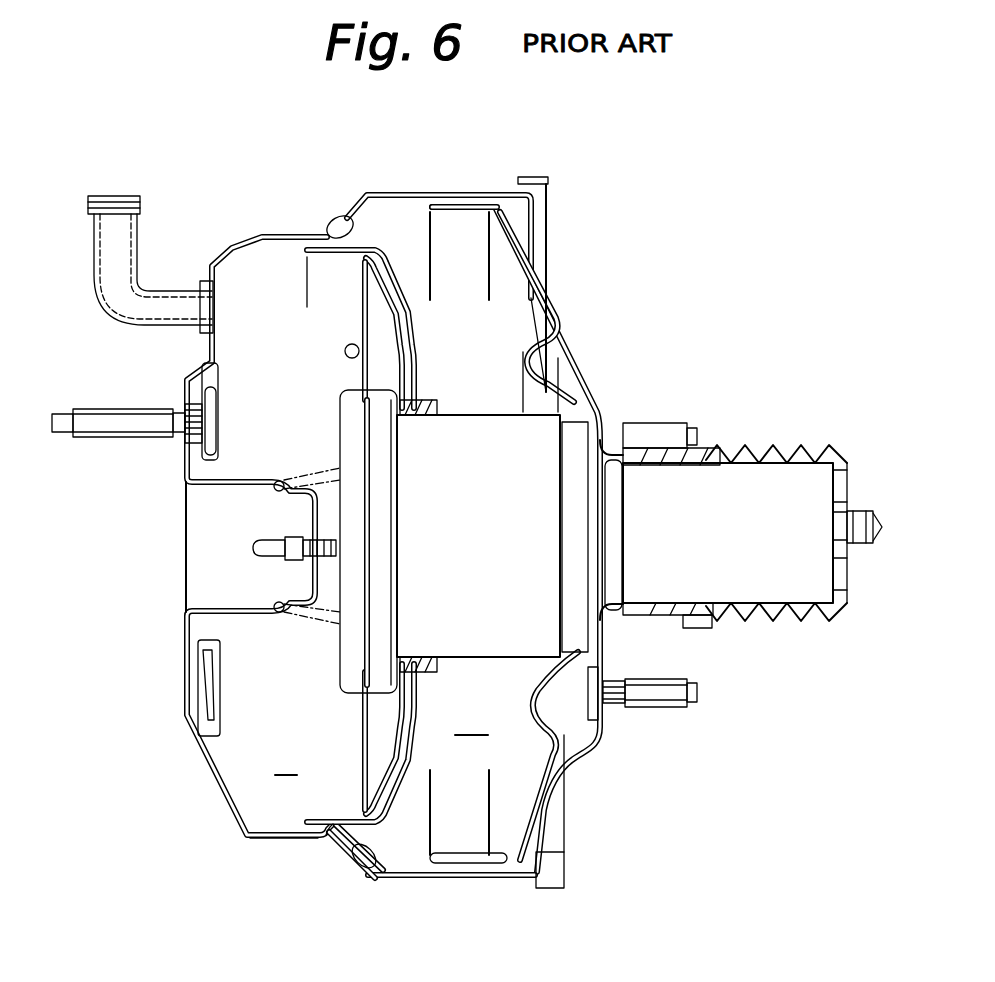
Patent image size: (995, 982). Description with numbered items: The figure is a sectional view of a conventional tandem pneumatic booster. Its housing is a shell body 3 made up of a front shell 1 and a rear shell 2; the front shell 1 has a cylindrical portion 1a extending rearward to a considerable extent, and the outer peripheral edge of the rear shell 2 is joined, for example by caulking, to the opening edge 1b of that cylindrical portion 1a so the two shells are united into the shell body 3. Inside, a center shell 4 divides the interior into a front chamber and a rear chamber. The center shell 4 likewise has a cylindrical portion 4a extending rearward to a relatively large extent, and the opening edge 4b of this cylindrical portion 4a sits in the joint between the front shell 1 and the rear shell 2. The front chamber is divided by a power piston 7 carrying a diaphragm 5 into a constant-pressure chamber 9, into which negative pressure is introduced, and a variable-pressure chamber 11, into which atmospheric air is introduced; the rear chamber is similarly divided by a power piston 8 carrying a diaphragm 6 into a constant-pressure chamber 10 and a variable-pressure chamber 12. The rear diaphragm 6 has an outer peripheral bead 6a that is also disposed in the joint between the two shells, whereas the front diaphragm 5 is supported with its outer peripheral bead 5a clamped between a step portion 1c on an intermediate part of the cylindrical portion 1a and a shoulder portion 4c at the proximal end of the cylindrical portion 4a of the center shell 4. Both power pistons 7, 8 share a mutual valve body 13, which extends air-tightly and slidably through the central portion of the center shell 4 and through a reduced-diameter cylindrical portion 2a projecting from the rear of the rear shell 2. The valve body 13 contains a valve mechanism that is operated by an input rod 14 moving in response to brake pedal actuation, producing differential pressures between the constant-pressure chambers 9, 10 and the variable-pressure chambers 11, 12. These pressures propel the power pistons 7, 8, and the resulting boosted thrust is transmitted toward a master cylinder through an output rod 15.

The front shell 1 is at (226, 786).
The cylindrical portion 1a is at (273, 840).
The opening edge 1b is at (541, 888).
The step portion 1c is at (324, 846).
The rear shell 2 is at (562, 742).
The reduced-diameter cylindrical portion 2a is at (658, 424).
The shell body 3 is at (228, 255).
The center shell 4 is at (362, 236).
The cylindrical portion 4a is at (429, 866).
The opening edge 4b is at (538, 872).
The shoulder portion 4c is at (380, 880).
The diaphragm 5 is at (340, 257).
The outer peripheral bead 5a is at (335, 224).
The diaphragm 6 is at (457, 218).
The outer peripheral bead 6a is at (556, 185).
The power piston 7 is at (343, 351).
The power piston 8 is at (521, 353).
The constant-pressure chamber 9 is at (286, 759).
The constant-pressure chamber 10 is at (471, 719).
The variable-pressure chamber 11 is at (365, 717).
The variable-pressure chamber 12 is at (590, 728).
The valve body 13 is at (558, 372).
The input rod 14 is at (874, 508).
The output rod 15 is at (258, 548).